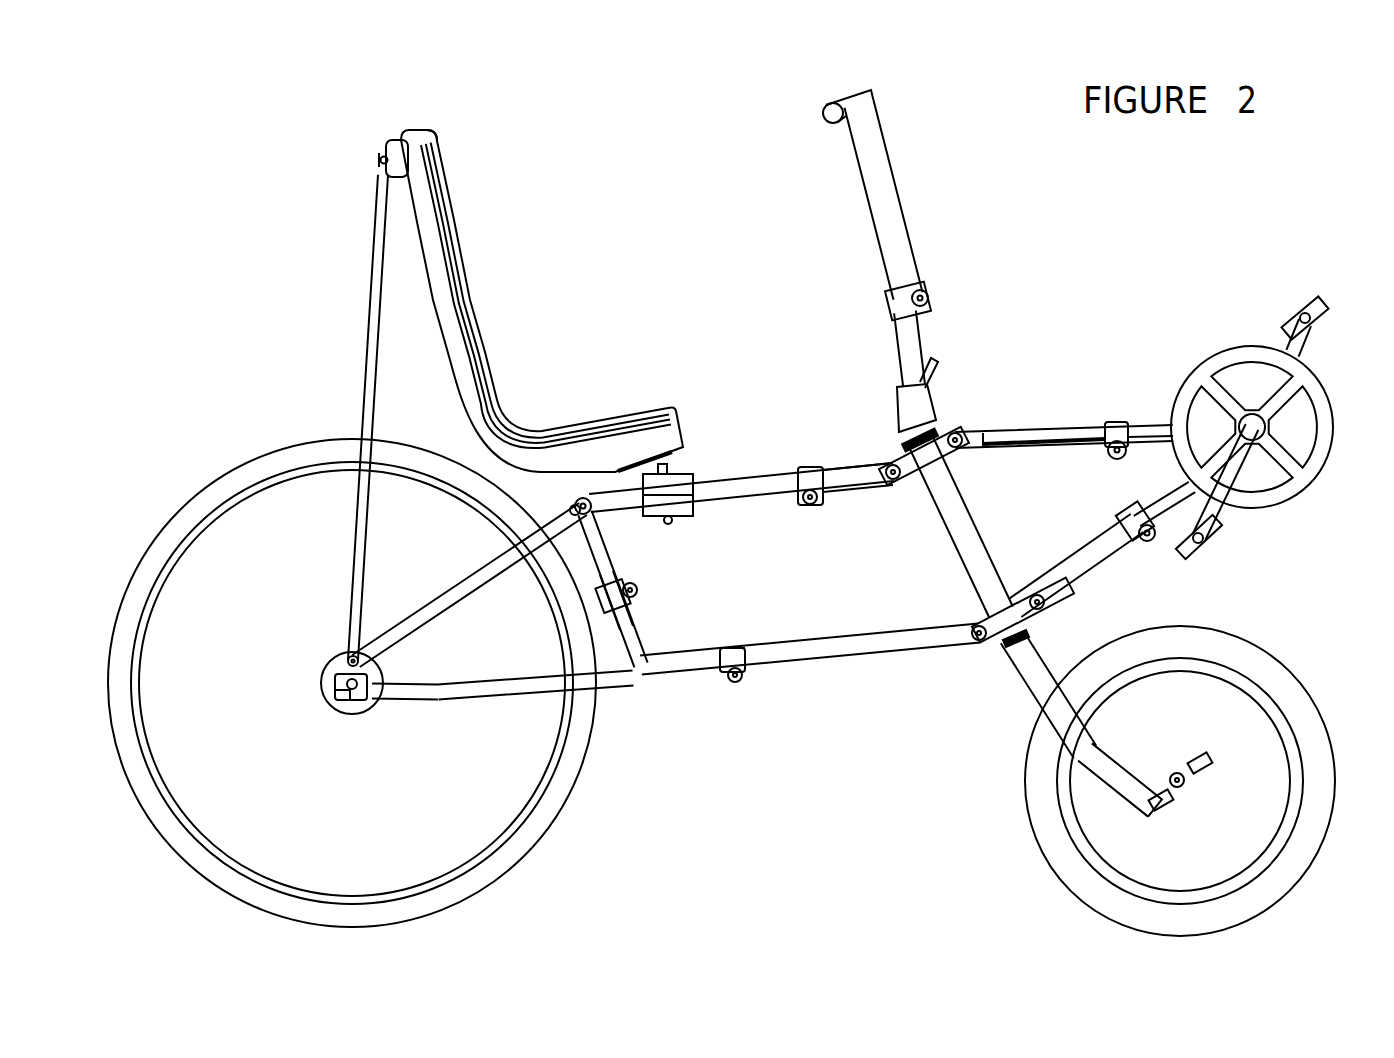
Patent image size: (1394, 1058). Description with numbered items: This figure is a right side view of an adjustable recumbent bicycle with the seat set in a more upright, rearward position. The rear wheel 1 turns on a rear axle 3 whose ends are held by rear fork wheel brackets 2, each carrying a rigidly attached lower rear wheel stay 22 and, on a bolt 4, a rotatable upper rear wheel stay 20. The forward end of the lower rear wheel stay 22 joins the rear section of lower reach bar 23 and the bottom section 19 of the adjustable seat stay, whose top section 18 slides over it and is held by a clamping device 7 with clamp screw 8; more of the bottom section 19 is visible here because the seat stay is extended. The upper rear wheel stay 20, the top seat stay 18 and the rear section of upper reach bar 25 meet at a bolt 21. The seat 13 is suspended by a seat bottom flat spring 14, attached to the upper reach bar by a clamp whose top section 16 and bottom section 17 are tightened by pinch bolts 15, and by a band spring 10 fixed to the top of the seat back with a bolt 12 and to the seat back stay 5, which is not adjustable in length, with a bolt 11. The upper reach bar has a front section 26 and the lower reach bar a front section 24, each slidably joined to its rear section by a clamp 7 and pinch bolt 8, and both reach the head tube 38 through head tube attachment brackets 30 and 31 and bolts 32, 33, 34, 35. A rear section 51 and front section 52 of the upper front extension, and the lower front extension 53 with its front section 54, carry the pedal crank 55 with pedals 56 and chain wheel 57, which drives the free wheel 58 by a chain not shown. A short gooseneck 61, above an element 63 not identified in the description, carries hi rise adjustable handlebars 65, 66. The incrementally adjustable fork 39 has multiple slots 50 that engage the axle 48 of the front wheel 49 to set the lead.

The rear wheel 1 is at (205, 498).
The rear fork wheel bracket 2 is at (340, 690).
The rear axle 3 is at (345, 666).
The bolt 4 is at (348, 657).
The seat back stay 5 is at (372, 375).
The clamping device 7 is at (595, 603).
The clamp screw 8 is at (638, 590).
The band spring 10 is at (396, 140).
The bolt 11 is at (381, 158).
The bolt 12 is at (412, 142).
The seat 13 is at (438, 238).
The seat bottom flat spring 14 is at (632, 462).
The pinch bolt 15 is at (670, 524).
The top section of clamping device 16 is at (683, 478).
The bottom section of clamping device 17 is at (695, 505).
The top section of adjustable seat stay 18 is at (596, 538).
The bottom section of adjustable seat stay 19 is at (636, 637).
The upper rear wheel stay 20 is at (463, 592).
The bolt 21 is at (574, 506).
The lower rear wheel stay 22 is at (530, 692).
The rear section of lower reach bar 23 is at (688, 662).
The front section of lower reach bar 24 is at (847, 652).
The rear section of upper reach bar 25 is at (750, 482).
The front section of upper reach bar 26 is at (848, 468).
The head tube attachment bracket 30 is at (916, 472).
The head tube attachment bracket 31 is at (1003, 620).
The bolt 32 is at (888, 480).
The bolt 33 is at (962, 436).
The bolt 34 is at (970, 642).
The bolt 35 is at (1050, 603).
The head tube 38 is at (957, 533).
The fork 39 is at (1038, 682).
The axle 48 is at (1178, 773).
The front wheel 49 is at (1068, 866).
The slots 50 is at (1206, 775).
The rear section of adjustable upper front extension 51 is at (1045, 432).
The front section of adjustable upper front extension 52 is at (1148, 424).
The lower front extension 53 is at (1095, 549).
The front section of lower front extension link 54 is at (1172, 491).
The pedal crank 55 is at (1283, 350).
The pedals 56 is at (1319, 298).
The chain wheel 57 is at (1305, 485).
The free wheel 58 is at (348, 705).
The short gooseneck 61 is at (938, 395).
The head tube top clamp 63 is at (890, 385).
The hi rise adjustable handlebars 65 is at (921, 345).
The hi rise adjustable handlebars 66 is at (888, 205).